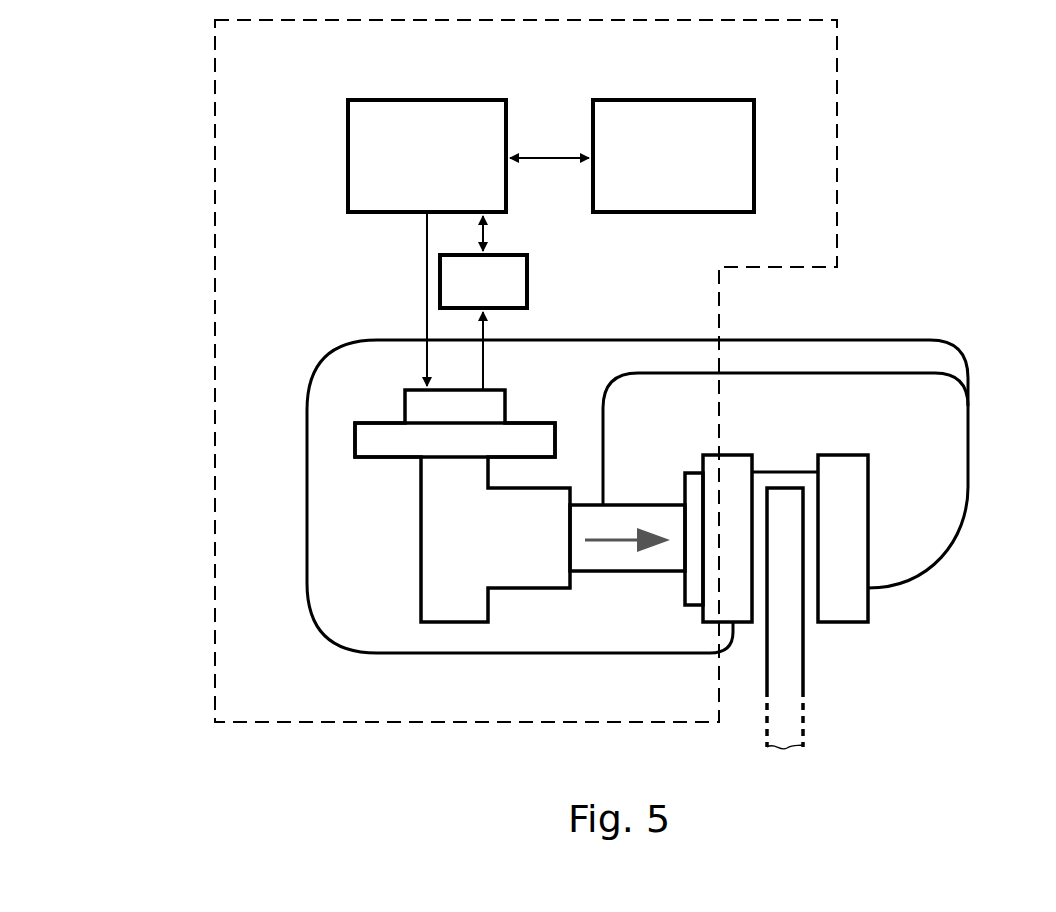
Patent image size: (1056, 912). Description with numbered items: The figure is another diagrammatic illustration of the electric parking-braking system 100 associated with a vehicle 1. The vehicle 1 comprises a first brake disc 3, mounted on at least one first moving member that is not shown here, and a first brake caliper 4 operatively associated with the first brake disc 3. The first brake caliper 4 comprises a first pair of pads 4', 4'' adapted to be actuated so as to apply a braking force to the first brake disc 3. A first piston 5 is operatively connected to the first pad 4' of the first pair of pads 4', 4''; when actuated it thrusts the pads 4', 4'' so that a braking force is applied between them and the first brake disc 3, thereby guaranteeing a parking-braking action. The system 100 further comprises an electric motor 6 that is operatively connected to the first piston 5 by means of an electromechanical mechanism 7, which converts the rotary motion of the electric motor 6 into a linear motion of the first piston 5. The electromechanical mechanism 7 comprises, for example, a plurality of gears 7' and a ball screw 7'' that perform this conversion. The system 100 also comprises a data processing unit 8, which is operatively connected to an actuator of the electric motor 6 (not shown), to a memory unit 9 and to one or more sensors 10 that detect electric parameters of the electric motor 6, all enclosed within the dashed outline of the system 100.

The electric parking-braking system 100 is at (812, 125).
The vehicle 1 is at (927, 314).
The first brake disc 3 is at (787, 710).
The first brake caliper 4 is at (875, 593).
The first pad 4' is at (729, 608).
The second pad 4'' is at (877, 558).
The first piston 5 is at (693, 580).
The electric motor 6 is at (373, 440).
The electromechanical mechanism 7 is at (474, 582).
The plurality of gears 7' is at (416, 582).
The ball screw 7'' is at (566, 634).
The data processing unit 8 is at (427, 156).
The memory unit 9 is at (673, 156).
The sensors 10 is at (483, 281).